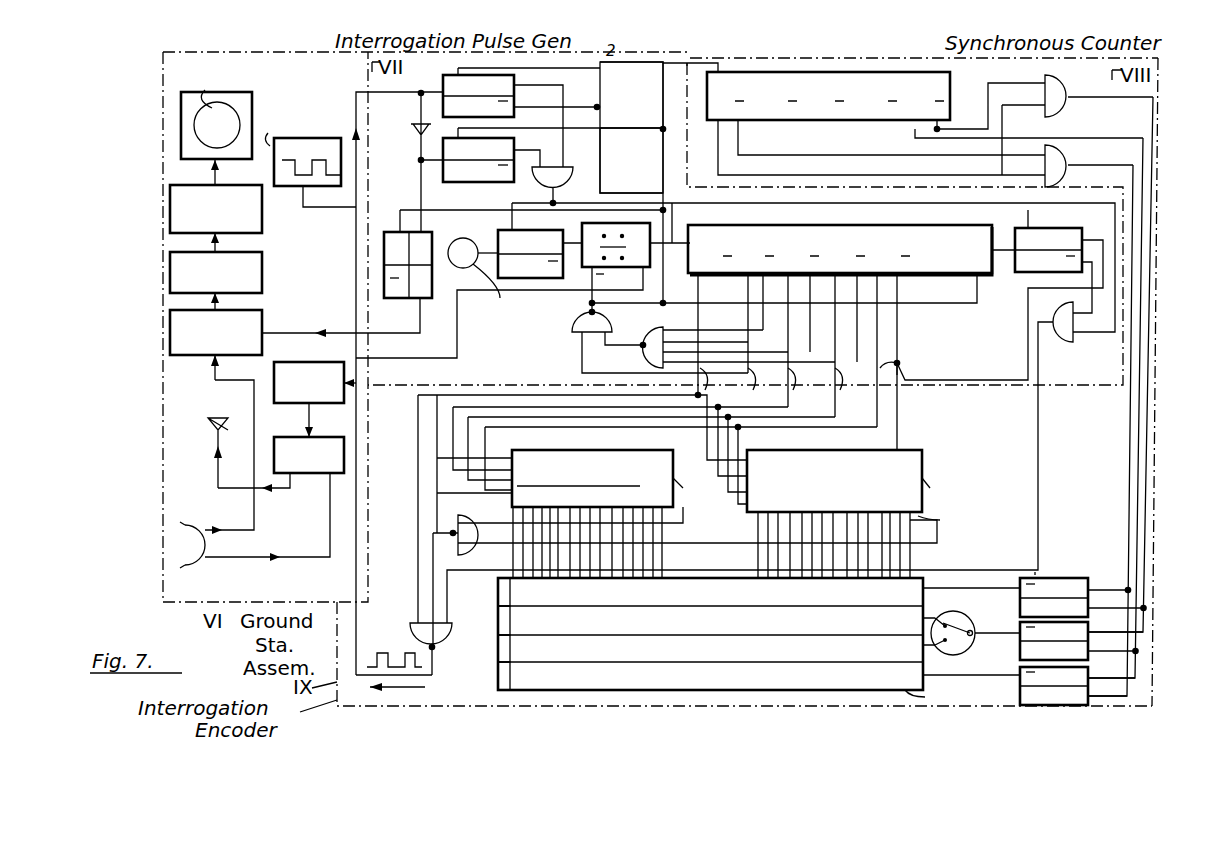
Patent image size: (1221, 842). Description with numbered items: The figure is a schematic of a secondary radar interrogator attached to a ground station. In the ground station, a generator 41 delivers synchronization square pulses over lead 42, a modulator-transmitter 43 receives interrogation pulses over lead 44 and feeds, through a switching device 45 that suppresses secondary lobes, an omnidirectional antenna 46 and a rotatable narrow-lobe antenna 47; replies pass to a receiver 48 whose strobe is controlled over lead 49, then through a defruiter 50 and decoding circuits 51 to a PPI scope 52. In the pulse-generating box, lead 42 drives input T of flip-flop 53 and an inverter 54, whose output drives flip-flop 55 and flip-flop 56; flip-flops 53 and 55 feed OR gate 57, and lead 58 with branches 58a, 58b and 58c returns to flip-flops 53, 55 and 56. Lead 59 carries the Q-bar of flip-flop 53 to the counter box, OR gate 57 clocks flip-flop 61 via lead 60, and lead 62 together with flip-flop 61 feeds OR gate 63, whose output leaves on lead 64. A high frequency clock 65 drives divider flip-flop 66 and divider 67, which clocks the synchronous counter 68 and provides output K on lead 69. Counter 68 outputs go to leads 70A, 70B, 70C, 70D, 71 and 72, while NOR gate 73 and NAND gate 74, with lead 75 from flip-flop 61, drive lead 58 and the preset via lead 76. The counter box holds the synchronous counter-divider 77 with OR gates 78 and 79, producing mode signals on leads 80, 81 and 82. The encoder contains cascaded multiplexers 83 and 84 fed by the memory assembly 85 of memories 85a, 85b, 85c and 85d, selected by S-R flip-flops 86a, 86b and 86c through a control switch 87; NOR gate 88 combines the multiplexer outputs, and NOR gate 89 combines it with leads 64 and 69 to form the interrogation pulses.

The generator 41 is at (330, 188).
The lead 42 is at (356, 90).
The modulator-transmitter 43 is at (325, 358).
The lead 44 is at (352, 596).
The switching device 45 is at (325, 410).
The omnidirectional antenna 46 is at (220, 425).
The rotatable narrow-lobe antenna 47 is at (192, 530).
The receiver 48 is at (262, 324).
The lead 49 is at (340, 333).
The defruiter 50 is at (262, 275).
The decoding circuits 51 is at (262, 228).
The PPI scope 52 is at (252, 101).
The flip-flop 53 is at (440, 80).
The inverter 54 is at (411, 130).
The flip-flop 55 is at (486, 176).
The flip-flop 56 is at (432, 300).
The OR gate 57 is at (575, 185).
The lead 58 is at (663, 108).
The branch of lead 58 58a is at (631, 95).
The branch of lead 58 58b is at (631, 160).
The branch of lead 58 58c is at (528, 222).
The lead 59 is at (679, 81).
The lead 60 is at (728, 212).
The flip-flop 61 is at (1032, 230).
The lead 62 is at (1115, 214).
The OR gate 63 is at (1060, 342).
The lead 64 is at (1040, 378).
The high frequency clock 65 is at (460, 262).
The flip-flop 66 is at (476, 245).
The divider 67 is at (632, 266).
The synchronous counter-by-R 68 is at (850, 214).
The lead 69 is at (510, 291).
The lead 70A is at (726, 387).
The lead 70B is at (772, 389).
The lead 70C is at (813, 390).
The lead 70D is at (859, 390).
The lead 71 is at (893, 372).
The lead 72 is at (905, 375).
The NOR gate 73 is at (666, 335).
The NAND gate 74 is at (572, 320).
The lead 75 is at (582, 345).
The lead 76 is at (950, 303).
The synchronous counter-divider 77 is at (950, 80).
The OR gate 78 is at (1066, 182).
The OR gate 79 is at (1068, 84).
The lead 80 is at (1147, 444).
The lead 81 is at (1075, 132).
The lead 82 is at (1130, 487).
The multiplexer 83 is at (566, 445).
The multiplexer 84 is at (922, 462).
The memory assembly 85 is at (694, 692).
The memory 85a is at (498, 676).
The memory 85b is at (498, 649).
The memory 85c is at (498, 621).
The memory 85d is at (498, 591).
The S-R flip-flop 86a is at (1020, 690).
The S-R flip-flop 86b is at (1020, 654).
The S-R flip-flop 86c is at (1056, 578).
The control switch 87 is at (957, 620).
The NOR gate 88 is at (458, 518).
The NOR gate 89 is at (412, 625).